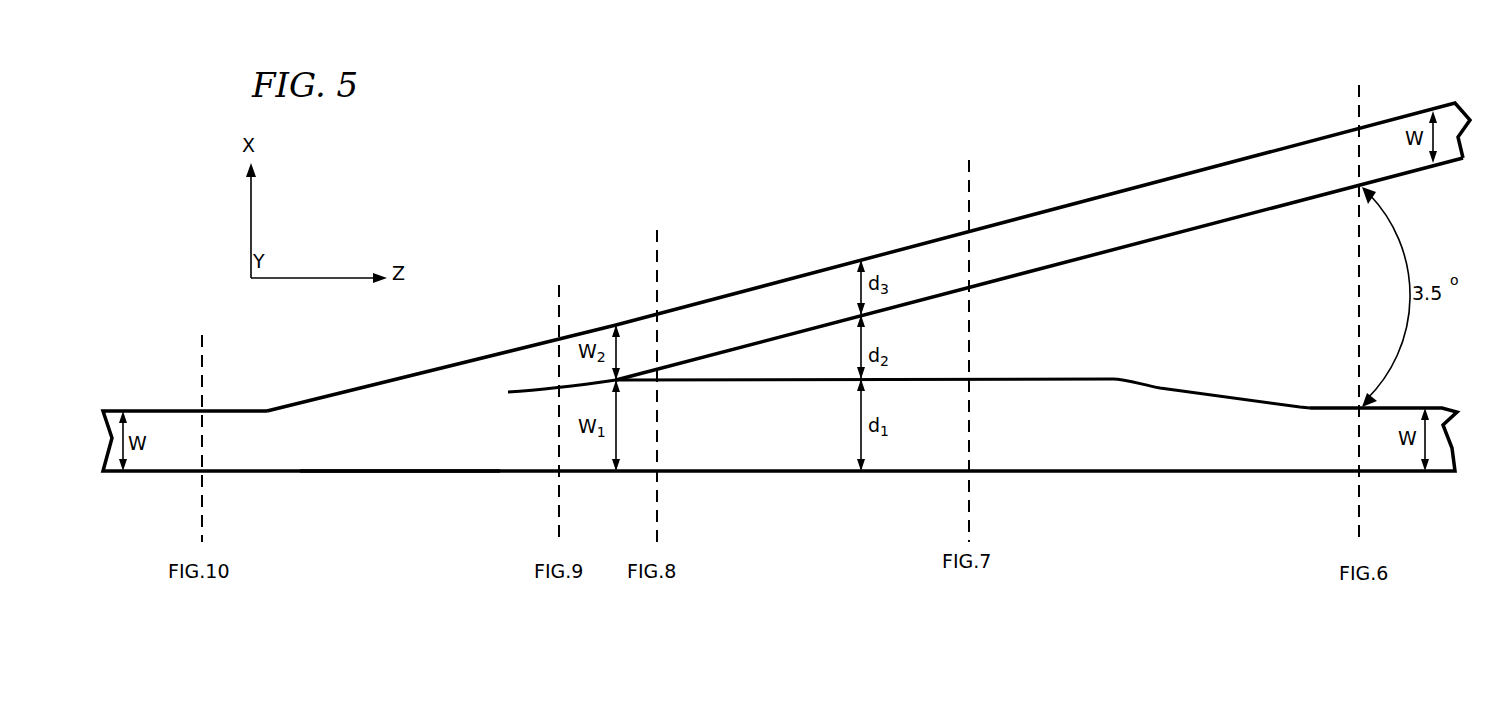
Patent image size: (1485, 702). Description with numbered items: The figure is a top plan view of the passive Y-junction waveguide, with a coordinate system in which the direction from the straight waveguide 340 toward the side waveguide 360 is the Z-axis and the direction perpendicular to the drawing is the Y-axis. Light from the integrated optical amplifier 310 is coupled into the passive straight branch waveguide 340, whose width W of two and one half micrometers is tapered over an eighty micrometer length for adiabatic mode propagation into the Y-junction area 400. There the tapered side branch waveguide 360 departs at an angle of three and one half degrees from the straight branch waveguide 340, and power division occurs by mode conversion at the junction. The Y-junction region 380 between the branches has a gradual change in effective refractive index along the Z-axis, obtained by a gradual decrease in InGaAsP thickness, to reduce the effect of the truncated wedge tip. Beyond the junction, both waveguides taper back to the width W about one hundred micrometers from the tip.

The optical amplifier 310 is at (884, 397).
The straight branch waveguide 340 is at (157, 452).
The side branch waveguide 360 is at (766, 300).
The Y-junction region 380 is at (1070, 308).
The Y-junction area 400 is at (437, 445).